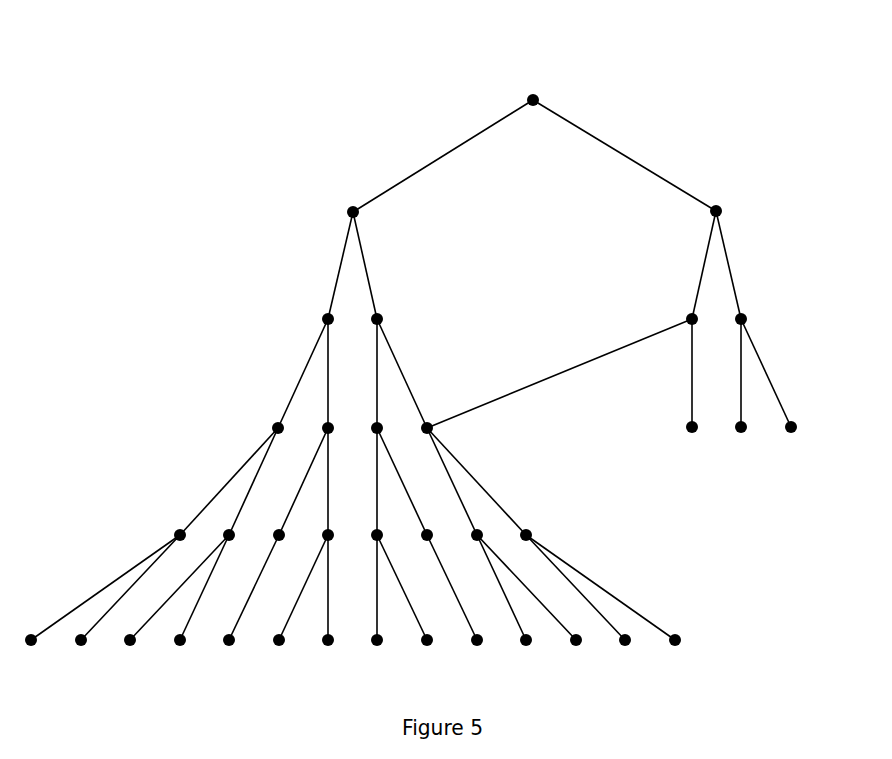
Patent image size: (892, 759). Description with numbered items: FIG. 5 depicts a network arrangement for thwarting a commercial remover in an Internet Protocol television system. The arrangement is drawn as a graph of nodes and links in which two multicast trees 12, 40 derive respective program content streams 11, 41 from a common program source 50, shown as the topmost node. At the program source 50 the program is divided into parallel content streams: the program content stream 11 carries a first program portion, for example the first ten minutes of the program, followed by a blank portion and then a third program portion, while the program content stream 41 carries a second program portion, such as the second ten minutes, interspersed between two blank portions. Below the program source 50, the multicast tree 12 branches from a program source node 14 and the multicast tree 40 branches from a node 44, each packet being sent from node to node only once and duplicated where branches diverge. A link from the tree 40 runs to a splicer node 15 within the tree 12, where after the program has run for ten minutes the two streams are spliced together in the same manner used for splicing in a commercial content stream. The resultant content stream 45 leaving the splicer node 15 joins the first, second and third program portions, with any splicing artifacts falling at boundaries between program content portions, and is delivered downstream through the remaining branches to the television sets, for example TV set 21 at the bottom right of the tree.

The program source 50 is at (531, 95).
The program source 14 is at (353, 205).
The multicast tree 12 is at (341, 240).
The program content stream 11 is at (365, 268).
The splicer node 15 is at (432, 418).
The resultant content stream 45 is at (482, 482).
The TV set 21 is at (677, 647).
The node 44 is at (712, 203).
The multicast tree 40 is at (725, 235).
The program content stream 41 is at (702, 265).